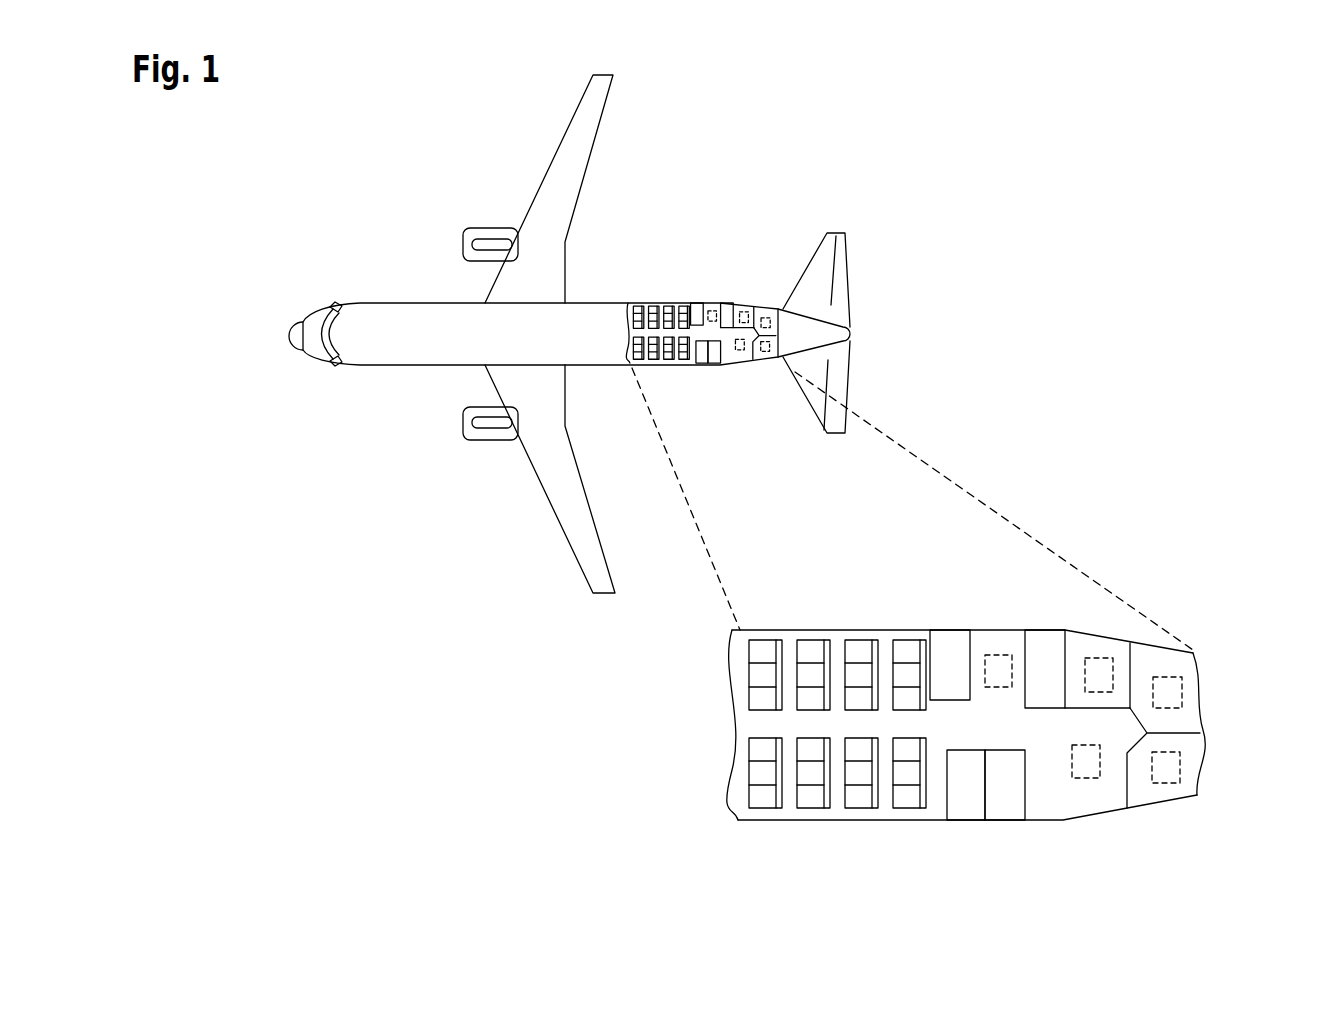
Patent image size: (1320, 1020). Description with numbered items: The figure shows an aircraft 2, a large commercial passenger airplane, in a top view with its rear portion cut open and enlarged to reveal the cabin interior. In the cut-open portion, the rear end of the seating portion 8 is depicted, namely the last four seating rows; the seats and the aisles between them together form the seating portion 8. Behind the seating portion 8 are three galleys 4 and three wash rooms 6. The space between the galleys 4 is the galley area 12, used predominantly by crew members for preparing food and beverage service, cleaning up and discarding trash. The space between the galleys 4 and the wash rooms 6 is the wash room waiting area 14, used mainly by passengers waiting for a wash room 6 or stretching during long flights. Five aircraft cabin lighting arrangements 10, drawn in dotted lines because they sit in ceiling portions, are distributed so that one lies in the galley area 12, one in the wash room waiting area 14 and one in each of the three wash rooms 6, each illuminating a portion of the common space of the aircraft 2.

The aircraft 2 is at (714, 214).
The galley 4 is at (947, 650).
The wash room 6 is at (1118, 647).
The seating portion 8 is at (843, 720).
The aircraft cabin lighting arrangement 10 is at (1003, 660).
The galley area 12 is at (978, 722).
The wash room waiting area 14 is at (1078, 727).